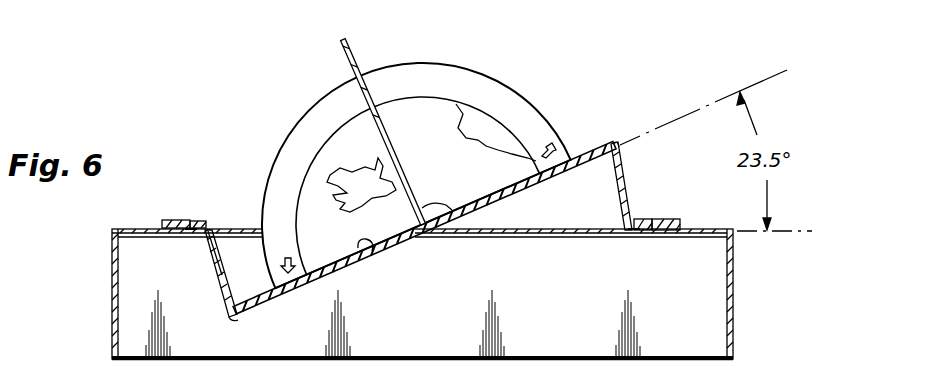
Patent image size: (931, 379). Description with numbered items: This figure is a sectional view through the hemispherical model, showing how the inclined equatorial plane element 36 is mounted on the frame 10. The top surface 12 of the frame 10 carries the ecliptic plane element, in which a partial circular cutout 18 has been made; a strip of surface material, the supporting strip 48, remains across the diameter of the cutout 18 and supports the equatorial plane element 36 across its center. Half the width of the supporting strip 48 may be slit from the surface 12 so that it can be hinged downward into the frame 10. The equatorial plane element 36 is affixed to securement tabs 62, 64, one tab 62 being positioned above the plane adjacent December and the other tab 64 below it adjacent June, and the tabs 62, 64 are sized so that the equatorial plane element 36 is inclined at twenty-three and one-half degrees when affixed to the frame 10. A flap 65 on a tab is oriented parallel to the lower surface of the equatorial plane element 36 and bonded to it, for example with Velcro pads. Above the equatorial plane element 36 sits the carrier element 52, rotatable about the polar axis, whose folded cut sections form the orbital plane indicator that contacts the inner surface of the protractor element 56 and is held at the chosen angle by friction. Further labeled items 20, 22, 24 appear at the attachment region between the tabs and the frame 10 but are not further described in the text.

The frame 10 is at (113, 288).
The surface 12 is at (137, 227).
The partial circular cutout 18 is at (213, 230).
The clamp 20 is at (202, 230).
The clamp block 22 is at (190, 220).
The fastener 24 is at (195, 234).
The equatorial plane element 36 is at (367, 250).
The supporting strip 48 is at (213, 268).
The carrier element 52 is at (585, 143).
The protractor element 56 is at (350, 40).
The tab 62 is at (618, 190).
The tab 64 is at (220, 242).
The flap 65 is at (238, 316).